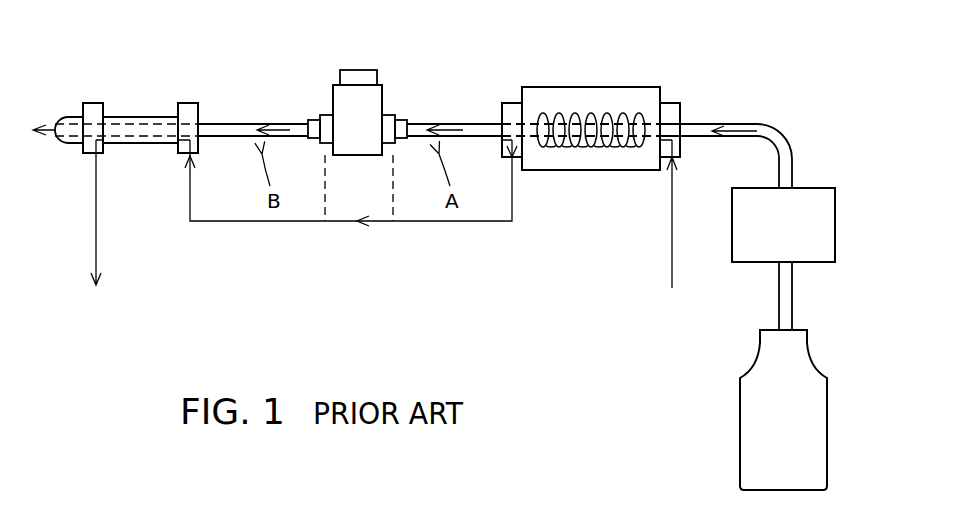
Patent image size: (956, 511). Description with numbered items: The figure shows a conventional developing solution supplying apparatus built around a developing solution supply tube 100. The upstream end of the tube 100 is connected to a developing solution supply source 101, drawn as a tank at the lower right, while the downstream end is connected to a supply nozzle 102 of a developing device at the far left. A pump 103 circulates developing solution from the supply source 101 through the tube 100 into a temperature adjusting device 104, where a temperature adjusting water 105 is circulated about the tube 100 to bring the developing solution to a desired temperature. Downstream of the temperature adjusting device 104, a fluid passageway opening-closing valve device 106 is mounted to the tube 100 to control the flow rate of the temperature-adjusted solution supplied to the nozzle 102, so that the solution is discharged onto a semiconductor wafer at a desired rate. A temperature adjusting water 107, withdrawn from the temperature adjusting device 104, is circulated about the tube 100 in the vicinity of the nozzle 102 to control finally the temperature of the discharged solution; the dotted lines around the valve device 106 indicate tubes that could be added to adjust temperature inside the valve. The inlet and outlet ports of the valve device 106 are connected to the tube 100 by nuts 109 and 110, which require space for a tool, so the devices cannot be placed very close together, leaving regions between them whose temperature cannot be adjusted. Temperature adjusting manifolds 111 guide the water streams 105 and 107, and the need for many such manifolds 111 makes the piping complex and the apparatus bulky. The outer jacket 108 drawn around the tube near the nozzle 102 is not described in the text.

The developing solution supply tube 100 is at (448, 118).
The developing solution supply source 101 is at (740, 396).
The supply nozzle 102 is at (70, 115).
The pump 103 is at (728, 263).
The temperature adjusting device 104 is at (585, 84).
The temperature adjusting water 105 is at (668, 222).
The fluid passageway opening-closing valve device 106 is at (360, 63).
The temperature adjusting water 107 is at (232, 222).
The outer tube / jacket 108 is at (150, 145).
The nut 109 is at (402, 117).
The nut 110 is at (308, 120).
The temperature adjusting manifold 111 is at (100, 103).